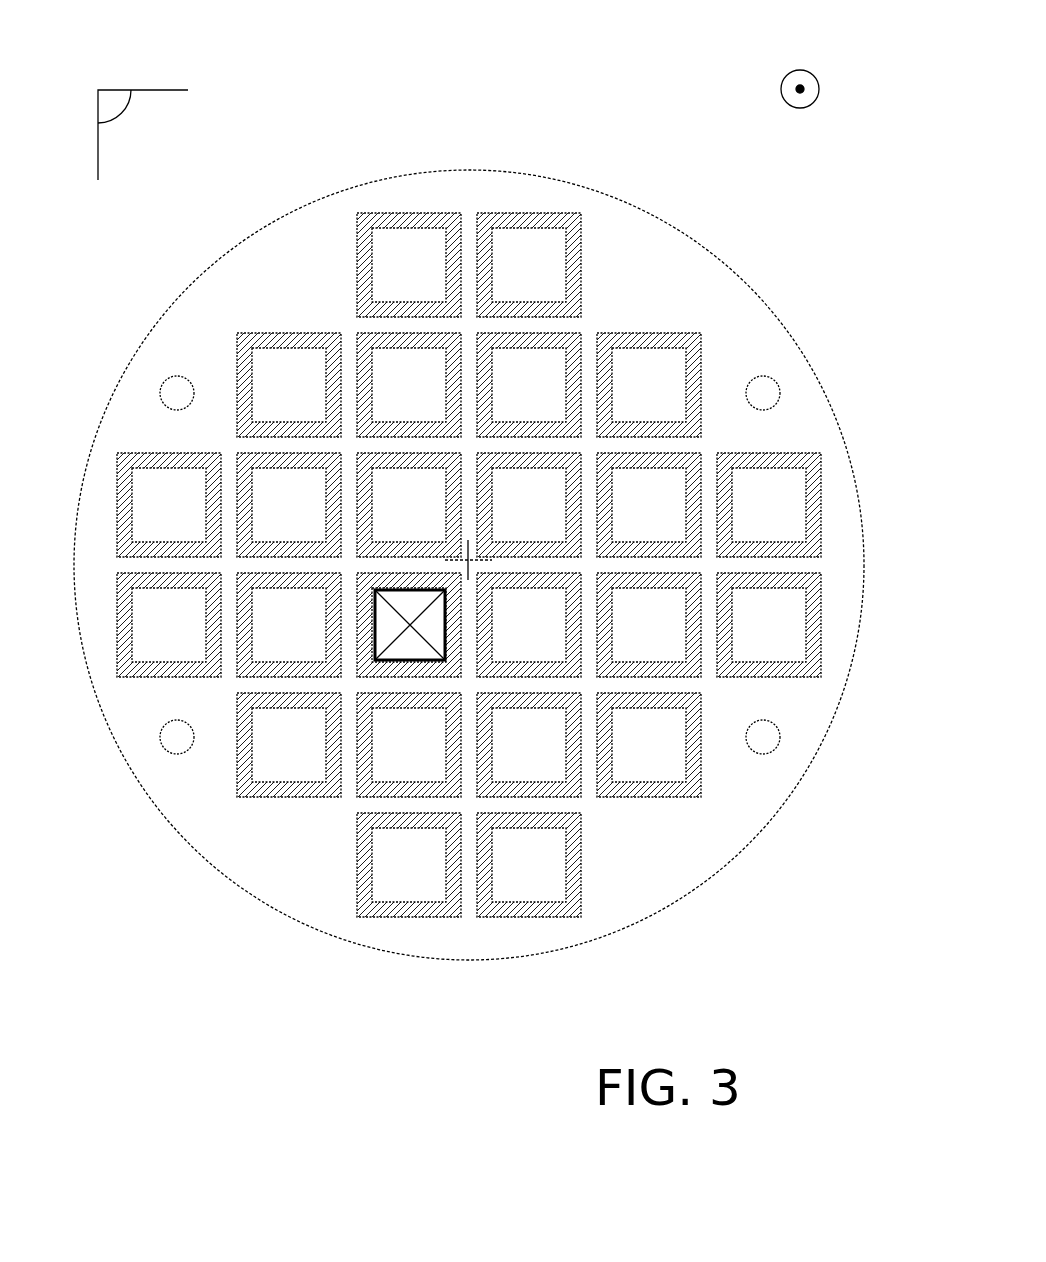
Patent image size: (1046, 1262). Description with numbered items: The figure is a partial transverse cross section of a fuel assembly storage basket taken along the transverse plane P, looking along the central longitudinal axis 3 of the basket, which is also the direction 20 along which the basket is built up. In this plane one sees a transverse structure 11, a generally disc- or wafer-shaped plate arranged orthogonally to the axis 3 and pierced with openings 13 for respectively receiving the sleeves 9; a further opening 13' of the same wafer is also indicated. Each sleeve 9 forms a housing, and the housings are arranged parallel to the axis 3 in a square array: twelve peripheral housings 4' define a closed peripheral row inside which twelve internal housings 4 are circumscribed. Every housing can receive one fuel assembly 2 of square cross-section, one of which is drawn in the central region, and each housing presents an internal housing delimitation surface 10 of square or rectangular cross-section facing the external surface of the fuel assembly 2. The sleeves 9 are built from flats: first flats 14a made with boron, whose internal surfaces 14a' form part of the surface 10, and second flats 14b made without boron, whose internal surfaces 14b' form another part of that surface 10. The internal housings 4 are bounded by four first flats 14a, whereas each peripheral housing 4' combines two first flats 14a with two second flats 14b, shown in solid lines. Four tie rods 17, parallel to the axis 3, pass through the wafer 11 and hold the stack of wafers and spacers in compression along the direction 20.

The fuel assembly 2 is at (410, 650).
The axis 3 is at (465, 560).
The internal housing 4 is at (327, 376).
The peripheral housing 4' is at (620, 553).
The sleeve 9 is at (583, 480).
The internal housing delimitation surface 10 is at (560, 278).
The transverse structure 11 is at (572, 177).
The opening 13 is at (181, 634).
The edge wall 13' is at (756, 625).
The first flat 14a is at (303, 582).
The internal surface of first flat 14a' is at (397, 422).
The second flat 14b is at (234, 740).
The internal surface of second flat 14b' is at (98, 451).
The tie rod 17 is at (177, 393).
The direction 20 is at (800, 89).
The transverse plane P is at (112, 100).